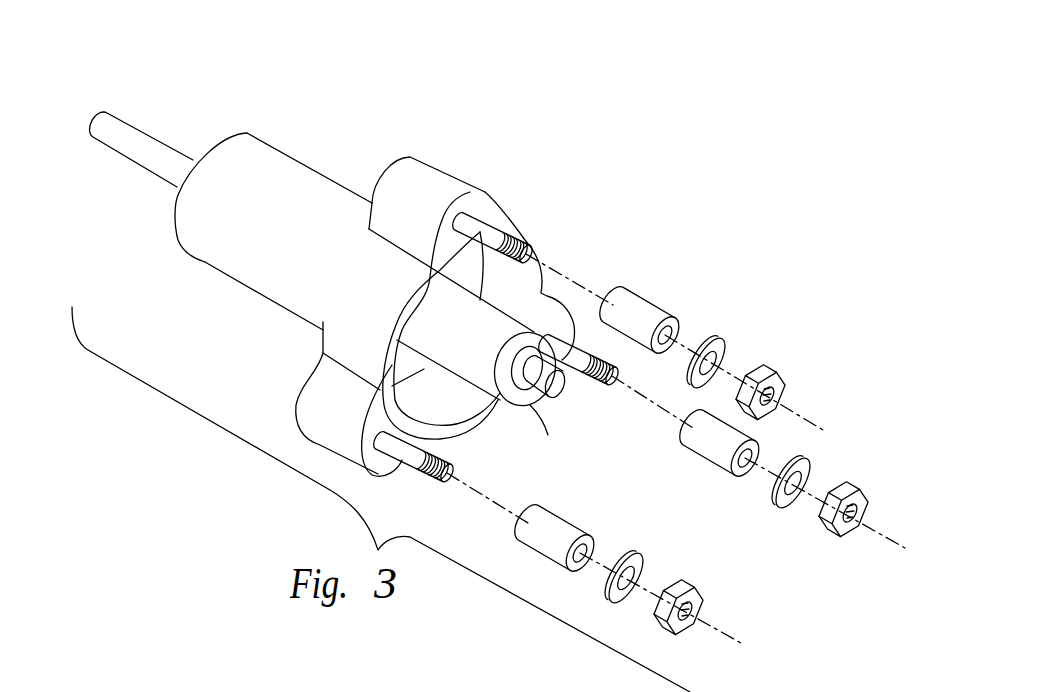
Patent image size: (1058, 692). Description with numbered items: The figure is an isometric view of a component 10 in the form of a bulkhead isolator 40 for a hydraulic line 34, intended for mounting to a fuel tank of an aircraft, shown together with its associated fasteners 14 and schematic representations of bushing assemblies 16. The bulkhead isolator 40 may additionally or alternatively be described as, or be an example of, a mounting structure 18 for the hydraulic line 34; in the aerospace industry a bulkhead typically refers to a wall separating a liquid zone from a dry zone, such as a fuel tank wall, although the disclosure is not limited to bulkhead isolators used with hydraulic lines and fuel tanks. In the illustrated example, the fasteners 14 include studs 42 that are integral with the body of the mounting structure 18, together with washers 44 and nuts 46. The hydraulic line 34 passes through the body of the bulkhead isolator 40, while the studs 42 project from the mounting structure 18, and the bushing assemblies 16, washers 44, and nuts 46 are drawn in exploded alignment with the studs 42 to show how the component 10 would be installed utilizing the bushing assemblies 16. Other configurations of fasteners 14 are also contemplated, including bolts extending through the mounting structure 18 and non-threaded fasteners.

The component 10 is at (305, 82).
The bulkhead isolator 40 is at (374, 116).
The hydraulic line 34 is at (148, 137).
The mounting structure 18 is at (442, 170).
The fasteners 14 is at (598, 193).
The studs 42 is at (497, 221).
The bushing assemblies 16 is at (647, 310).
The washers 44 is at (707, 337).
The nuts 46 is at (762, 367).